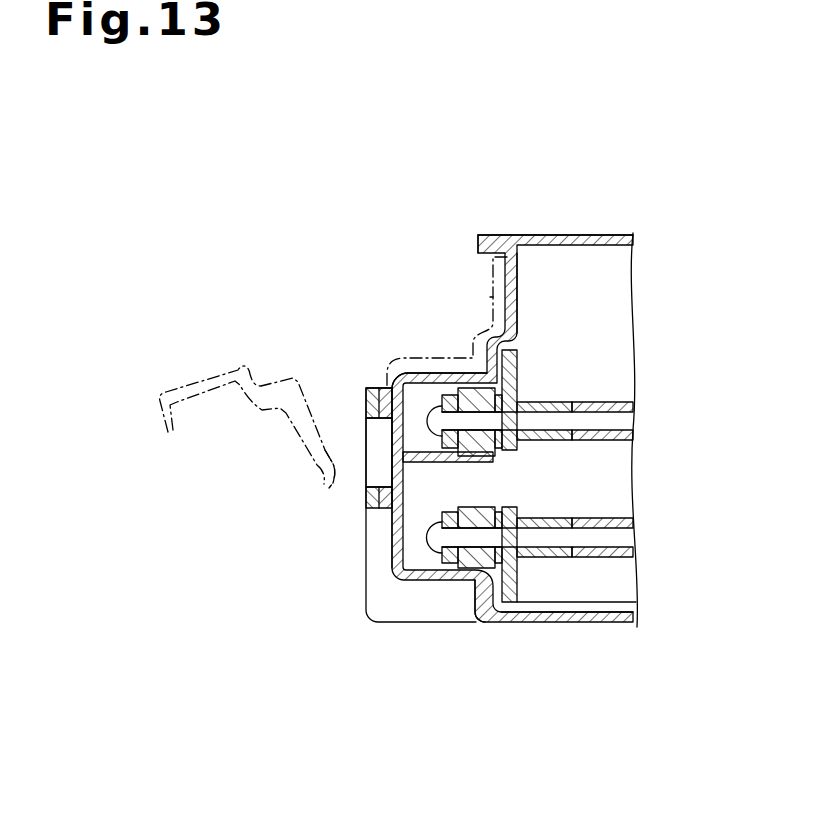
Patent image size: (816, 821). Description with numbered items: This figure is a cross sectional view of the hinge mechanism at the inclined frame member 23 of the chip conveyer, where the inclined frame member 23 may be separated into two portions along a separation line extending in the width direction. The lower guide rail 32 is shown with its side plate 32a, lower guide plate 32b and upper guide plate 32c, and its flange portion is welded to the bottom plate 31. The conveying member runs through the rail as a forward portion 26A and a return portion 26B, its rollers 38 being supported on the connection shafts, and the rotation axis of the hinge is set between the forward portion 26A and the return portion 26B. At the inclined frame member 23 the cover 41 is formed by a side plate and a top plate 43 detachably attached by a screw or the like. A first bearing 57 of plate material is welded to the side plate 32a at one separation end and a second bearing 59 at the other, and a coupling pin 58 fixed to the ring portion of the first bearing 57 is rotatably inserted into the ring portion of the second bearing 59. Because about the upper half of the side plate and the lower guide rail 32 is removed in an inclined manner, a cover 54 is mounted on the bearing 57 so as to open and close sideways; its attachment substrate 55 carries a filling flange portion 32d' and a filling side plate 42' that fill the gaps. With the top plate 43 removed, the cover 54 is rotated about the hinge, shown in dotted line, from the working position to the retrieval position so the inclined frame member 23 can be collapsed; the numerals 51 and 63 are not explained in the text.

The inclined frame member 23 is at (612, 229).
The bottom plate 31 is at (583, 612).
The forward portion 26A is at (600, 398).
The return portion 26B is at (598, 515).
The lower guide rail 32 is at (390, 557).
The side plate 32a is at (392, 537).
The lower guide plate 32b is at (440, 582).
The upper guide plate 32c is at (460, 448).
The filling flange portion 32d' is at (447, 339).
The roller 38 is at (467, 470).
The cover 41 is at (496, 233).
The filling side plate 42' is at (554, 293).
The top plate 43 is at (582, 234).
The clip end 51 is at (331, 493).
The cover 54 is at (488, 286).
The attachment substrate 55 is at (490, 297).
The first bearing 57 is at (362, 400).
The coupling pin 58 is at (363, 468).
The second bearing 59 is at (384, 384).
The cover 63 is at (373, 598).